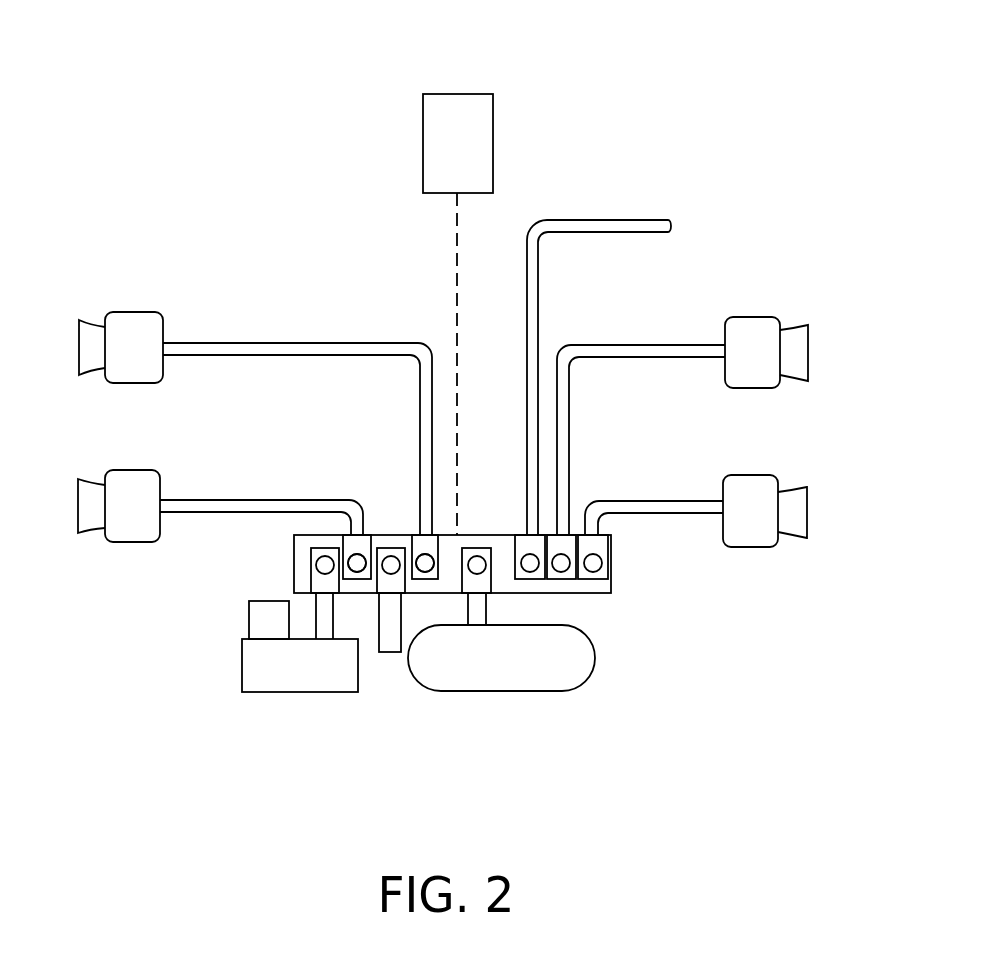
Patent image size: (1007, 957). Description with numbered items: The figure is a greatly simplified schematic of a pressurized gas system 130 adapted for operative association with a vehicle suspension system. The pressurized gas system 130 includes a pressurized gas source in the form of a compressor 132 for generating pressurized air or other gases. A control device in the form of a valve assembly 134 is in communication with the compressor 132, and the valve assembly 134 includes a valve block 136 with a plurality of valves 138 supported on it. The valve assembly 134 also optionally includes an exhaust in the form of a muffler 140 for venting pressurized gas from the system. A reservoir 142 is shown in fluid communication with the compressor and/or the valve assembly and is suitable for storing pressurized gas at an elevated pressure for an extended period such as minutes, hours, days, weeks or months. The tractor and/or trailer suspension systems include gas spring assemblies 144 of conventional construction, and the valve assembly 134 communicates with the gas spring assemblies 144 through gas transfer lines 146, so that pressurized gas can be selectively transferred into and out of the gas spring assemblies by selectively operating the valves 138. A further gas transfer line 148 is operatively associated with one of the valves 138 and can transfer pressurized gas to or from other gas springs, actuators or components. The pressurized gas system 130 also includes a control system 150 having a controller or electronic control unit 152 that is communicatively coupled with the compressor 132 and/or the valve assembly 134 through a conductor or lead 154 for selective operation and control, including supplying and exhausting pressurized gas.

The pressurized gas system 130 is at (157, 657).
The compressor 132 is at (298, 673).
The valve assembly 134 is at (280, 562).
The valve block 136 is at (613, 579).
The valves 138 is at (425, 558).
The muffler 140 is at (392, 643).
The reservoir 142 is at (533, 677).
The gas spring assemblies 144 is at (130, 312).
The gas transfer lines 146 is at (277, 348).
The gas transfer line 148 is at (630, 223).
The control system 150 is at (535, 97).
The controller 152 is at (438, 158).
The conductor or lead 154 is at (456, 327).